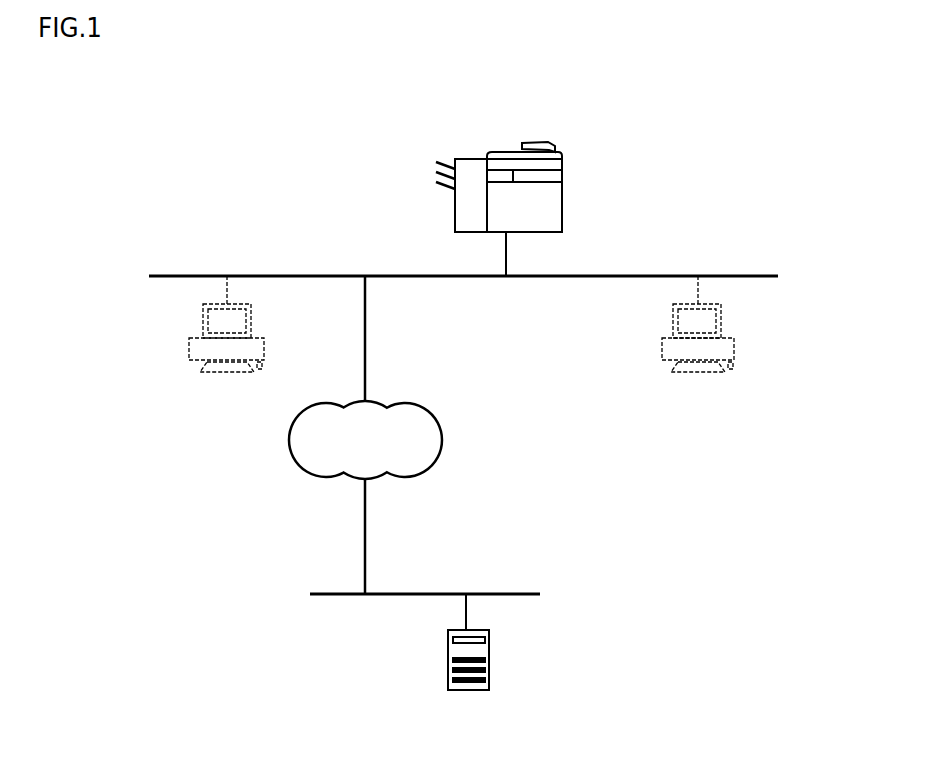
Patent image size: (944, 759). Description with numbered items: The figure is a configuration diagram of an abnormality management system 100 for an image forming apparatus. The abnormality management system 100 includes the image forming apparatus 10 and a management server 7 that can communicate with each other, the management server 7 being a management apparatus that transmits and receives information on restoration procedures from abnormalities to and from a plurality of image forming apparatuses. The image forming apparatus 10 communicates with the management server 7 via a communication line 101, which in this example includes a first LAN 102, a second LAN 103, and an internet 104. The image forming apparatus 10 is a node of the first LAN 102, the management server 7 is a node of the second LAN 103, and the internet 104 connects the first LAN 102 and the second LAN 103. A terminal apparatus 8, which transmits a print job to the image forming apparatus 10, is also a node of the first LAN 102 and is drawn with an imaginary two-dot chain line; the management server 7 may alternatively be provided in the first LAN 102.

The abnormality management system 100 is at (776, 139).
The communication line 101 is at (262, 493).
The first LAN 102 is at (323, 275).
The second LAN 103 is at (351, 593).
The internet 104 is at (443, 440).
The image forming apparatus 10 is at (562, 187).
The terminal apparatus 8 is at (189, 348).
The management server 7 is at (448, 645).